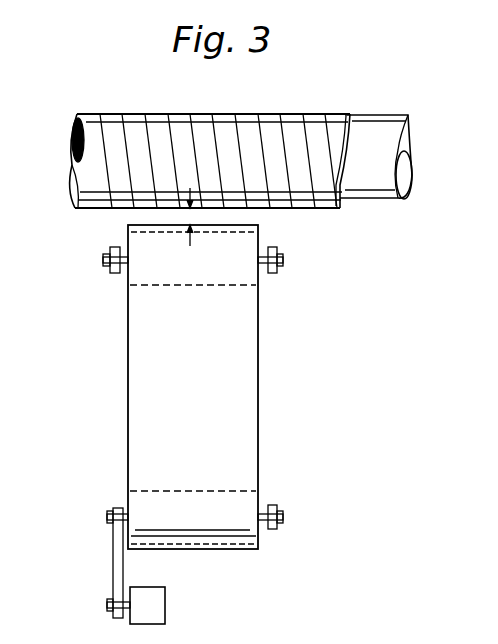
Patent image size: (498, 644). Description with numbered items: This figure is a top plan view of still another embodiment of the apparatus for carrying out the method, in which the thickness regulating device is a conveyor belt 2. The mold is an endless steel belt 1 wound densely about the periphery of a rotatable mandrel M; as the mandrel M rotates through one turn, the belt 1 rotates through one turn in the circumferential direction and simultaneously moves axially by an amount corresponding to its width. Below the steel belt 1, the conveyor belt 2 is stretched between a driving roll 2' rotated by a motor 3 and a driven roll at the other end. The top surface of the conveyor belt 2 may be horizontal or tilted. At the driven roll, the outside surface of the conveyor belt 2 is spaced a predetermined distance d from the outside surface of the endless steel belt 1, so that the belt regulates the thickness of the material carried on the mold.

The endless steel belt 1 is at (109, 124).
The rotatable mandrel M is at (405, 128).
The conveyor belt 2 is at (193, 387).
The driving roll 2' is at (210, 540).
The motor 3 is at (165, 608).
The predetermined distance d is at (192, 214).